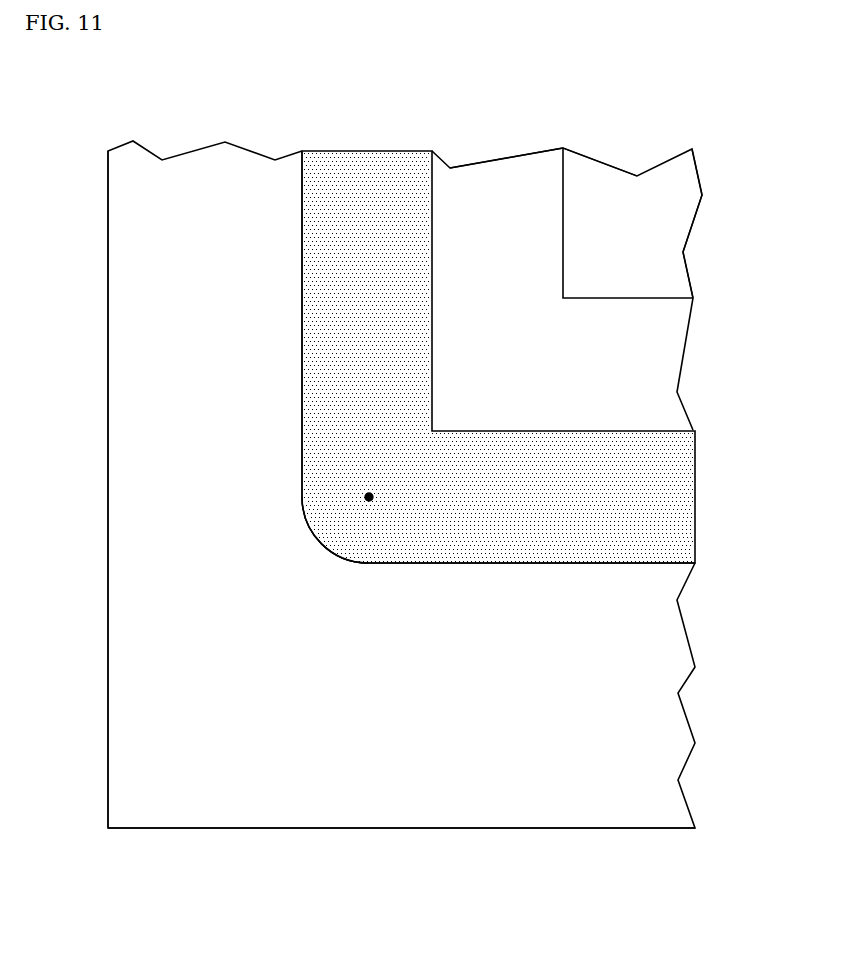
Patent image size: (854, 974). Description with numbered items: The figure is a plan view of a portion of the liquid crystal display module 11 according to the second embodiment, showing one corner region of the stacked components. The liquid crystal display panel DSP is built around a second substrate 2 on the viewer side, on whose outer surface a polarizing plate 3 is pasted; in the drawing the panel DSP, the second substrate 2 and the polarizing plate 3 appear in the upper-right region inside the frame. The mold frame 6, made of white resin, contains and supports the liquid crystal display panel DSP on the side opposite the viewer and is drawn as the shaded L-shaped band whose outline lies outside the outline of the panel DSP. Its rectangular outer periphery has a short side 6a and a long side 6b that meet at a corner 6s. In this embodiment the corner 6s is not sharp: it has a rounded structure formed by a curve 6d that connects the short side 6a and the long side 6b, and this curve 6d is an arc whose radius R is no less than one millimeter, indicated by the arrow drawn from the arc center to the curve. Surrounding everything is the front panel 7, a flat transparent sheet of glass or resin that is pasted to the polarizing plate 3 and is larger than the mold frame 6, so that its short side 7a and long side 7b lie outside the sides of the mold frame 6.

The liquid crystal display module 11 is at (699, 130).
The second substrate 2 is at (506, 177).
The polarizing plate 3 is at (600, 195).
The liquid crystal display panel DSP is at (567, 139).
The mold frame 6 is at (377, 170).
The short side 6a is at (523, 573).
The long side 6b is at (292, 257).
The curve 6d is at (299, 530).
The corner 6s is at (317, 563).
The radius R is at (369, 497).
The front panel 7 is at (218, 160).
The short side 7a is at (368, 838).
The long side 7b is at (87, 519).